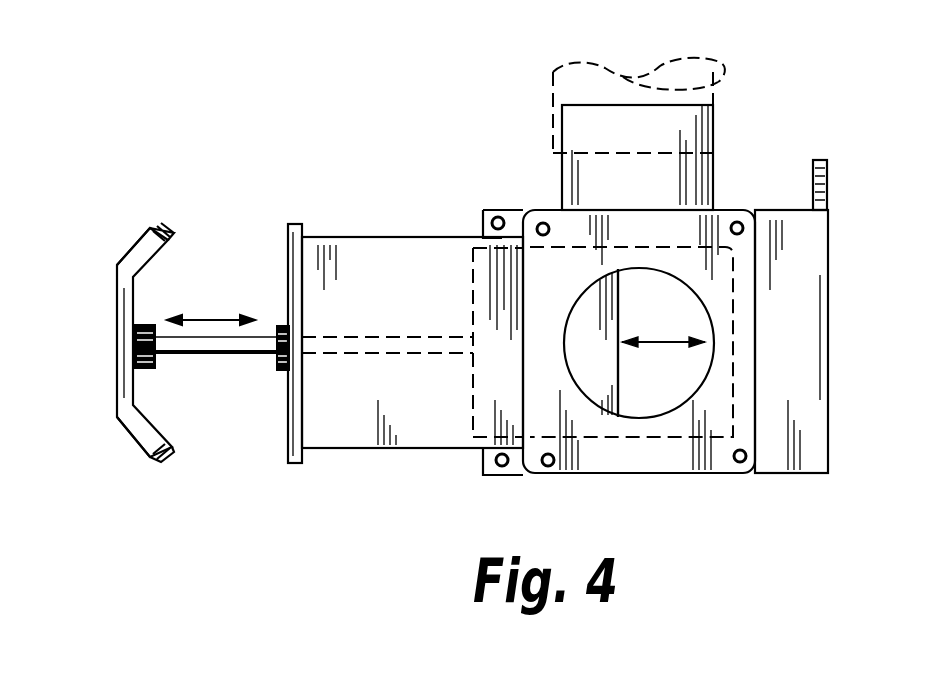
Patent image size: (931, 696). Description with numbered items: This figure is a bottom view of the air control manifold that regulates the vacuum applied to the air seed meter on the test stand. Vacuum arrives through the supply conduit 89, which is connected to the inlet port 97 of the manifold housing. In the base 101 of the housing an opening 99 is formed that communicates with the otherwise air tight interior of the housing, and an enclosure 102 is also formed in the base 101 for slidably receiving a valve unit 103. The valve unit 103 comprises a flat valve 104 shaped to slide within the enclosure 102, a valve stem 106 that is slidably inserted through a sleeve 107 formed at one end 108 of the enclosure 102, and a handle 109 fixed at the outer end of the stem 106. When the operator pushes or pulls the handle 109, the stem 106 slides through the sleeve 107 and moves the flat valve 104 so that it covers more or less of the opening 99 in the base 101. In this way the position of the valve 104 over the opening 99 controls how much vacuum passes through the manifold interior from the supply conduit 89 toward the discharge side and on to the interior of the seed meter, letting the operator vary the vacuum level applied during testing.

The supply conduit 89 is at (735, 70).
The inlet port 97 is at (713, 173).
The opening 99 is at (660, 408).
The base 101 is at (627, 457).
The enclosure 102 is at (440, 430).
The valve unit 103 is at (498, 303).
The flat valve 104 is at (583, 317).
The valve stem 106 is at (237, 350).
The sleeve 107 is at (278, 320).
The end of the enclosure 108 is at (283, 227).
The handle 109 is at (137, 238).